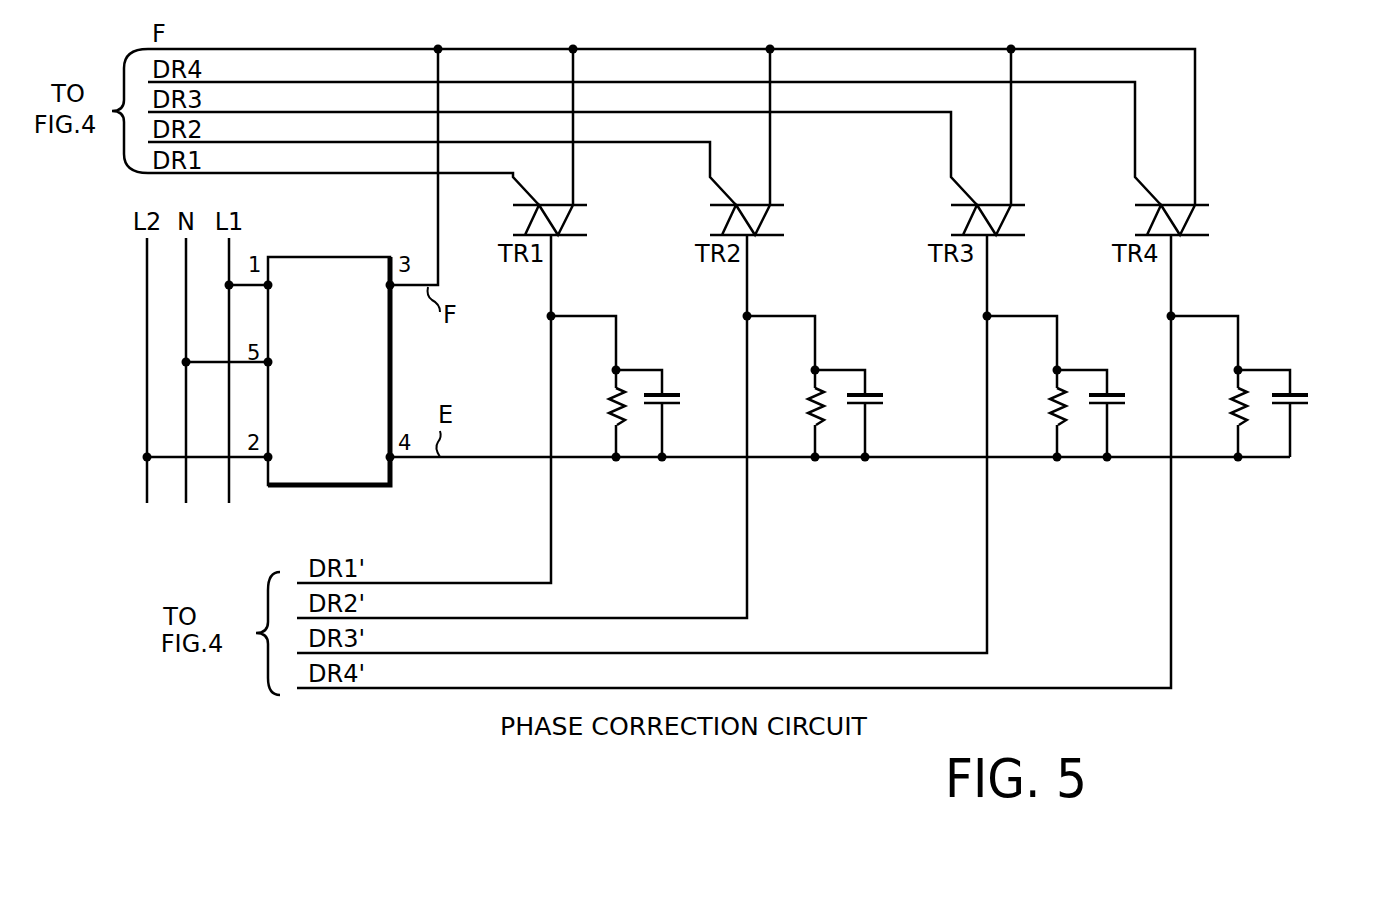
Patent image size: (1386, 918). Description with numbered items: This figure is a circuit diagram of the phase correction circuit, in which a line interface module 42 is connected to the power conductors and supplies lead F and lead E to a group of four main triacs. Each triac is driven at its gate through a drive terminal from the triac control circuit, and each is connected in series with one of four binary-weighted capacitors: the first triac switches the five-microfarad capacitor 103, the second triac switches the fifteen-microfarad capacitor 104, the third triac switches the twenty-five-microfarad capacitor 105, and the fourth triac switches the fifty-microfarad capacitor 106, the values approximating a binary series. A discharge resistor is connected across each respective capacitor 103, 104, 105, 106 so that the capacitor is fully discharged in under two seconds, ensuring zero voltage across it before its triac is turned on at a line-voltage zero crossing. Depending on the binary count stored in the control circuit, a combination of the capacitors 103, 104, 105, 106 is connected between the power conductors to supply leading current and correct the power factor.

The line interface module 42 is at (337, 435).
The capacitor C103 with discharge resistor R103 103 is at (639, 387).
The capacitor C104 with discharge resistor R104 104 is at (839, 387).
The capacitor C105 with discharge resistor R105 105 is at (1072, 387).
The capacitor C106 with discharge resistor R106 106 is at (1262, 387).